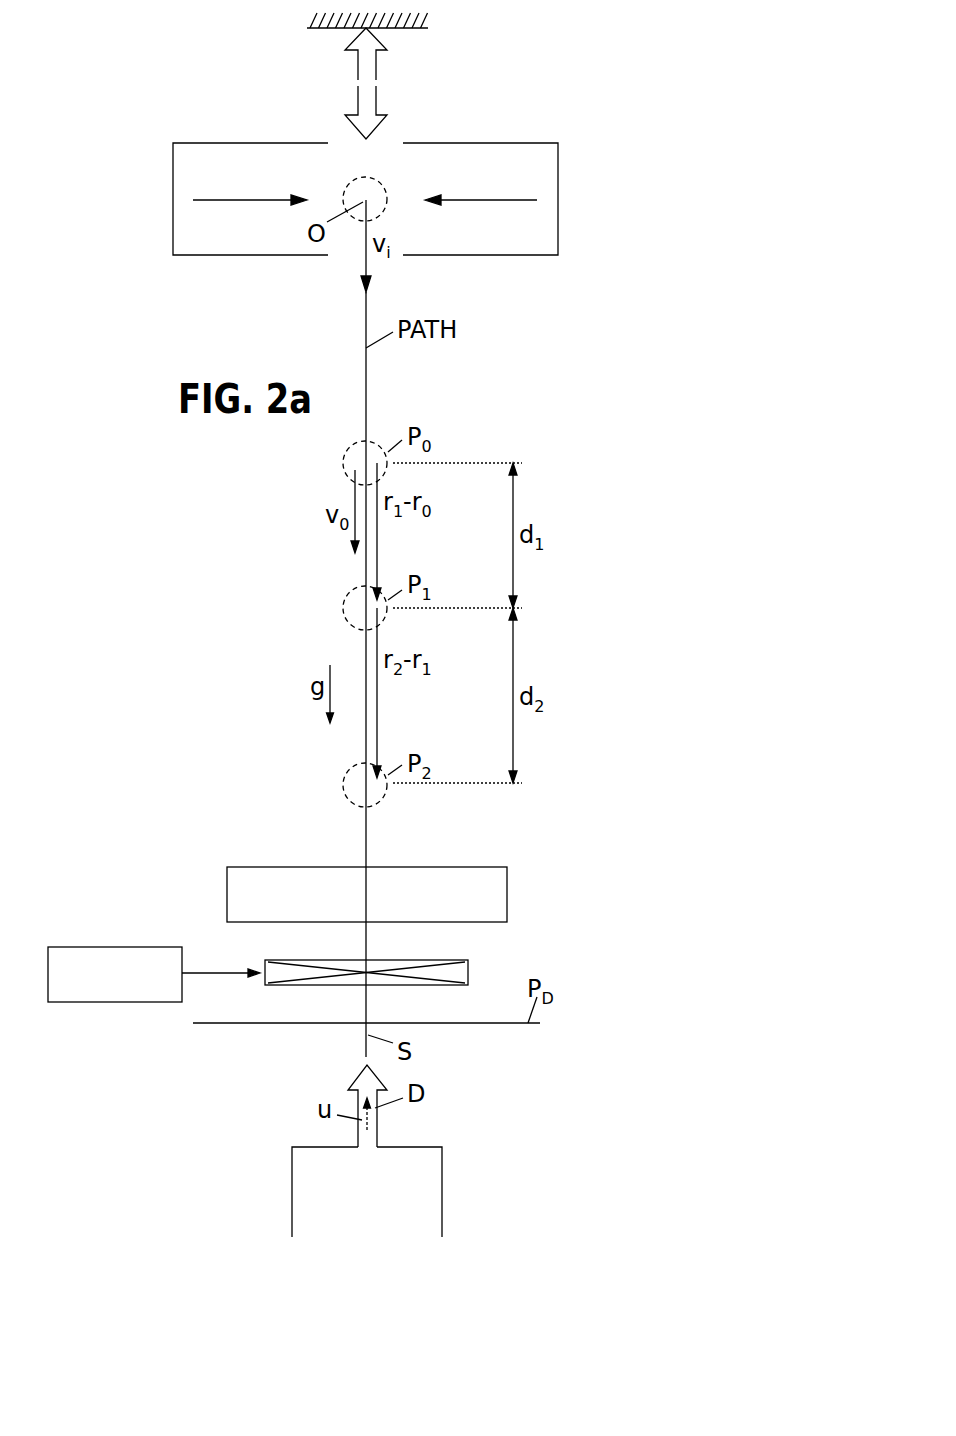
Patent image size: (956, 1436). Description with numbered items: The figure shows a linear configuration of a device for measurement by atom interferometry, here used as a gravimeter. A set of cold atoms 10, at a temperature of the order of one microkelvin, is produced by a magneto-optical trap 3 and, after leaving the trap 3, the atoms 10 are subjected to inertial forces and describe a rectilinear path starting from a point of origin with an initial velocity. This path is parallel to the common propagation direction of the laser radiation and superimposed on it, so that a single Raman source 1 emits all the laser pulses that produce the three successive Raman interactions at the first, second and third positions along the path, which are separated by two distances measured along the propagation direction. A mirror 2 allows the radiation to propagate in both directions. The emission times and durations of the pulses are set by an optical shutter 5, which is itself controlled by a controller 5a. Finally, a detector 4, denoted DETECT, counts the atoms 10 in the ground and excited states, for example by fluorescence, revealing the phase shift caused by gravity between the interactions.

The Raman source 1 is at (442, 1175).
The mirror 2 is at (420, 21).
The magneto-optical trap 3 is at (560, 163).
The detector 4 is at (507, 882).
The optical shutter 5 is at (468, 968).
The controller 5a is at (73, 947).
The set of cold atoms 10 is at (387, 185).